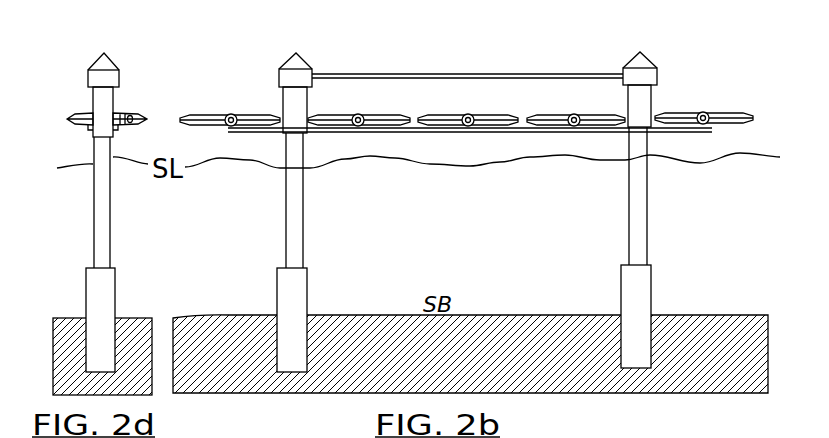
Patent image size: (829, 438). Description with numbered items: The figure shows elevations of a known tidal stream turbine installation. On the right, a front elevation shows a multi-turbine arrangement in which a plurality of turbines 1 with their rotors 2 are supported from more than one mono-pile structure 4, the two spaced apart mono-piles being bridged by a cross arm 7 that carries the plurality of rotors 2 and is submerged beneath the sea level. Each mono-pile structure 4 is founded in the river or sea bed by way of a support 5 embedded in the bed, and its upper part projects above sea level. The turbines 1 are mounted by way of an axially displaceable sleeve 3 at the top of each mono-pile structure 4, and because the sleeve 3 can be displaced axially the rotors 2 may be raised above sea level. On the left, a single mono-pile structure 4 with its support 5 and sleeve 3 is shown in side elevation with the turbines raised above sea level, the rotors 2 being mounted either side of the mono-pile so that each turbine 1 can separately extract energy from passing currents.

In FIG. 2B, the turbine 1 is at (232, 112).
In FIG. 2B, the rotor 2 is at (210, 118).
In FIG. 2D, the axially displaceable sleeve 3 is at (104, 104).
In FIG. 2B, the axially displaceable sleeve 3 is at (295, 108).
In FIG. 2D, the mono-pile structure 4 is at (102, 228).
In FIG. 2B, the mono-pile structure 4 is at (292, 228).
In FIG. 2D, the support 5 is at (100, 307).
In FIG. 2B, the support 5 is at (293, 307).
In FIG. 2B, the cross arm 7 is at (420, 128).